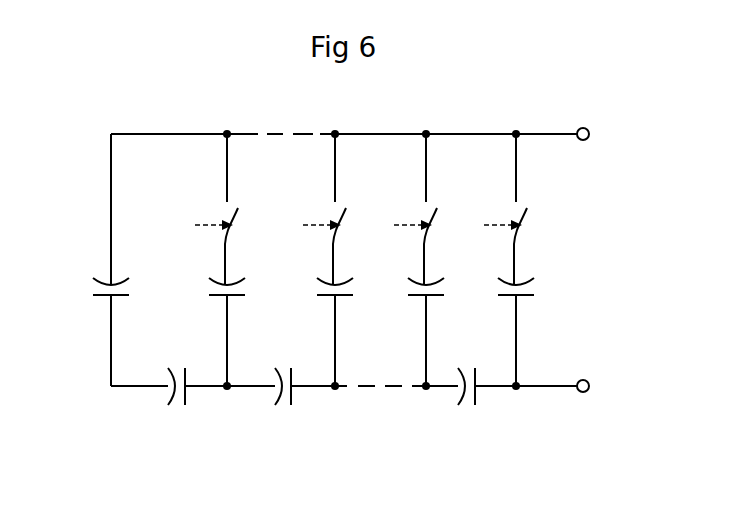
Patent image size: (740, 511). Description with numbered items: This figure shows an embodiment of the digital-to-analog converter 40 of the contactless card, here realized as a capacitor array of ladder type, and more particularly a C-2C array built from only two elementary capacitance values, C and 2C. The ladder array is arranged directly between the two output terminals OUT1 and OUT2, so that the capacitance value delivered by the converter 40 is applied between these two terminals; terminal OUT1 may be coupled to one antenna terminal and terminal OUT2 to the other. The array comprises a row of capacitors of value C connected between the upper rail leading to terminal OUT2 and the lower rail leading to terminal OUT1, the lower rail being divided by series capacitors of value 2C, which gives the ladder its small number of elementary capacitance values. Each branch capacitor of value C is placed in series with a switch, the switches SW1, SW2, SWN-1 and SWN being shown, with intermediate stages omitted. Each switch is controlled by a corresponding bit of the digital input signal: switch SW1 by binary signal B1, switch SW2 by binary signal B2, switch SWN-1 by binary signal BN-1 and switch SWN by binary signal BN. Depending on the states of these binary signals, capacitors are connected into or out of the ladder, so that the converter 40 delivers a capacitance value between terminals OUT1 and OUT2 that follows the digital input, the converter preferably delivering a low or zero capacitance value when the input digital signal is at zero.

The digital-to-analog converter 40 is at (61, 212).
The switch SW1 is at (238, 211).
The switch SW2 is at (346, 211).
The switch SWN-1 is at (452, 200).
The switch SWN is at (527, 211).
The binary signal B1 is at (205, 226).
The binary signal B2 is at (313, 226).
The binary signal BN-1 is at (404, 226).
The binary signal BN is at (494, 226).
The elementary capacitance value C is at (98, 298).
The elementary capacitance value 2C is at (173, 398).
The output terminal OUT1 is at (587, 380).
The output terminal OUT2 is at (585, 140).